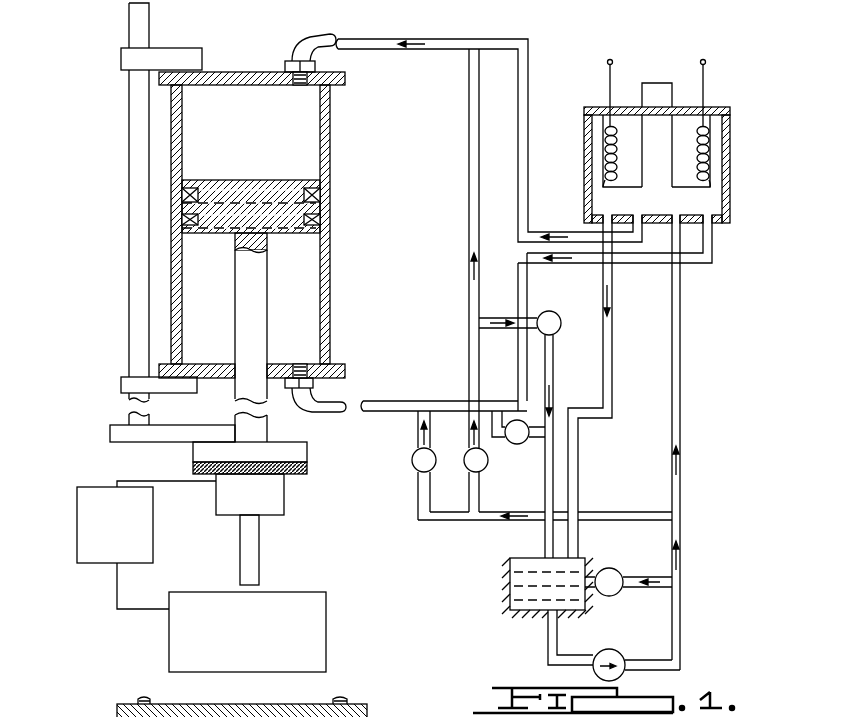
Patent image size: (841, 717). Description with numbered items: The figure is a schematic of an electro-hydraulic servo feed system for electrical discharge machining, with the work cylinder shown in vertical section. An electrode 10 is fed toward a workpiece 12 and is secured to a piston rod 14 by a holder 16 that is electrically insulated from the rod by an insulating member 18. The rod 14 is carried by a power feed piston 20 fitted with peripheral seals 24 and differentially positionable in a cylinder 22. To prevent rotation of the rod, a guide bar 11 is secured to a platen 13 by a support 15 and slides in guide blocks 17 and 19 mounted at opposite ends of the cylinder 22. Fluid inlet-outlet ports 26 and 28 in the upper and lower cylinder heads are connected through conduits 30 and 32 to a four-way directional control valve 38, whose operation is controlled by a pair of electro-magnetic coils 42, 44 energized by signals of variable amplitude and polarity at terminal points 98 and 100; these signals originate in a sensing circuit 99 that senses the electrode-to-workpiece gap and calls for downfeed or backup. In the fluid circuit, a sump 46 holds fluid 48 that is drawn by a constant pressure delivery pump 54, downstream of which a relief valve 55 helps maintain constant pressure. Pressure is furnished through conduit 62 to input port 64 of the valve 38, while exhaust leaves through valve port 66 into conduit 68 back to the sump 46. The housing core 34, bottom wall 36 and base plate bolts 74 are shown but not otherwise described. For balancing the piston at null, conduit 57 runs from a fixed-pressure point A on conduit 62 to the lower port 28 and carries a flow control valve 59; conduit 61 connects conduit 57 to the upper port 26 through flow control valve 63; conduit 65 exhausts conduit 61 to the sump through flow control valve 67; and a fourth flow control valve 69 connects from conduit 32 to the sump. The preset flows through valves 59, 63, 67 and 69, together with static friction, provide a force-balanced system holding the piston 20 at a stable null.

The electrode 10 is at (252, 551).
The guide bar 11 is at (129, 311).
The workpiece 12 is at (316, 612).
The platen 13 is at (193, 451).
The piston rod 14 is at (260, 304).
The support 15 is at (110, 433).
The holder 16 is at (268, 493).
The guide block 17 is at (121, 384).
The insulating member 18 is at (307, 468).
The guide block 19 is at (121, 57).
The power feed piston 20 is at (182, 210).
The cylinder 22 is at (331, 133).
The peripheral seals 24 is at (322, 220).
The fluid inlet-outlet port 26 is at (298, 86).
The fluid inlet-outlet port 28 is at (318, 378).
The conduit 30 is at (372, 45).
The conduit 32 is at (527, 299).
The core 34 is at (657, 146).
The housing bottom wall 36 is at (708, 216).
The directional control valve 38 is at (731, 172).
The electro-magnetic coil 42 is at (603, 150).
The electro-magnetic coil 44 is at (708, 146).
The sump 46 is at (547, 584).
The fluid 48 is at (508, 565).
The constant pressure delivery pump 54 is at (612, 648).
The relief valve 55 is at (613, 568).
The conduit 57 is at (601, 508).
The flow control valve 59 is at (414, 470).
The conduit 61 is at (469, 165).
The conduit 62 is at (680, 360).
The flow control valve 63 is at (486, 470).
The input port 64 is at (683, 214).
The conduit 65 is at (493, 330).
The valve port 66 is at (610, 215).
The flow control valve 67 is at (561, 323).
The conduit 68 is at (612, 350).
The flow control valve 69 is at (517, 444).
The bolts 74 is at (245, 704).
The terminal point 98 is at (698, 84).
The sensing circuit 99 is at (129, 558).
The terminal point 100 is at (603, 84).
The point A is at (684, 515).